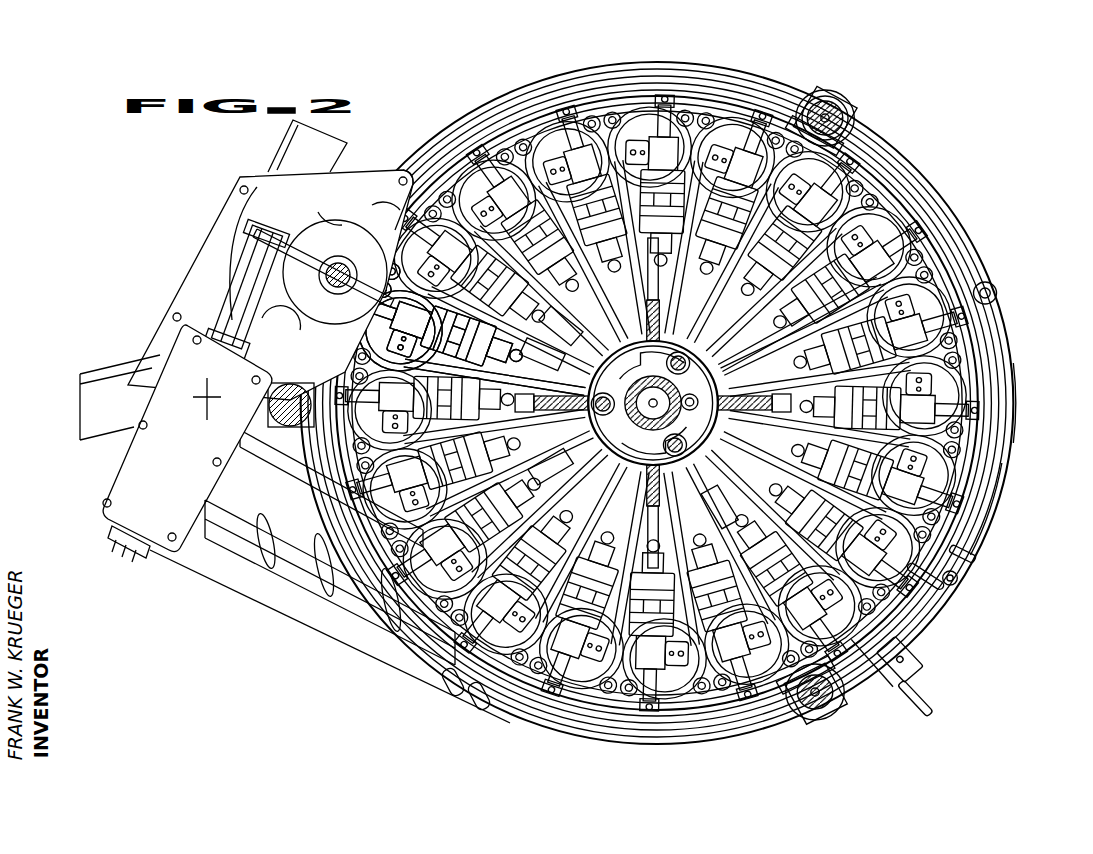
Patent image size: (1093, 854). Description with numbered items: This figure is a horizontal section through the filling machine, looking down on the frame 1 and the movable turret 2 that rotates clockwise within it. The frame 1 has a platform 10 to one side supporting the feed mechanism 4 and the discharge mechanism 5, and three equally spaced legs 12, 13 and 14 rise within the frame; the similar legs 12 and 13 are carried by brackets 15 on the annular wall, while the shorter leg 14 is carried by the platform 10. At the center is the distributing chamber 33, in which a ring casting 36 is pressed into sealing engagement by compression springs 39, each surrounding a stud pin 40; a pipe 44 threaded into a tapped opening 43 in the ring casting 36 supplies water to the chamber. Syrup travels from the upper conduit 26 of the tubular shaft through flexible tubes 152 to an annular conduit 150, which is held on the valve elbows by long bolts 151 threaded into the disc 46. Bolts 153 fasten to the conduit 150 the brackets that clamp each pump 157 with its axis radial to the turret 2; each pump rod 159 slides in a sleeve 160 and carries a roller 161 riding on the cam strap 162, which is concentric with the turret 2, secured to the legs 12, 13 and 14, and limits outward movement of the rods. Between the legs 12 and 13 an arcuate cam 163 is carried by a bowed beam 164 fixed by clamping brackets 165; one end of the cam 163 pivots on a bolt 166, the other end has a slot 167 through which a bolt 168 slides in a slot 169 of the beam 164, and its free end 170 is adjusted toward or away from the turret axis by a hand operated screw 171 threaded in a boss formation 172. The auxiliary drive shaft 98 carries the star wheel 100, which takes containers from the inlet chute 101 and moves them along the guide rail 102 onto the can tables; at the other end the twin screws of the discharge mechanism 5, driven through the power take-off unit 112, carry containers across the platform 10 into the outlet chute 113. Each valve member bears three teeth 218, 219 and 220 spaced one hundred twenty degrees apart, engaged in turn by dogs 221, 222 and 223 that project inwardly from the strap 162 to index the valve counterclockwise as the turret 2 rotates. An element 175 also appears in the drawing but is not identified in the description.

The frame 1 is at (657, 387).
The movable turret 2 is at (656, 368).
The feed mechanism 4 is at (300, 225).
The discharge mechanism 5 is at (310, 560).
The platform 10 is at (243, 225).
The leg 12 is at (864, 117).
The leg 13 is at (847, 699).
The leg 14 is at (280, 404).
The brackets 15 is at (809, 406).
The upper conduit 26 is at (685, 403).
The distributing chamber 33 is at (634, 299).
The ring casting 36 is at (623, 507).
The compression springs 39 is at (704, 386).
The stud pin 40 is at (547, 390).
The tapped opening 43 is at (686, 422).
The pipe 44 is at (710, 420).
The disc 46 is at (698, 403).
The auxiliary drive shaft 98 is at (339, 262).
The star wheel 100 is at (383, 210).
The inlet chute 101 is at (320, 146).
The guide rail 102 is at (223, 267).
The power take-off unit 112 is at (387, 262).
The outlet chute 113 is at (112, 406).
The annular conduit 150 is at (550, 342).
The long bolt 151 is at (553, 466).
The flexible tubes 152 is at (653, 400).
The bolts 153 is at (721, 507).
The pump 157 is at (669, 225).
The rod 159 is at (704, 403).
The sleeve 160 is at (670, 403).
The roller 161 is at (657, 403).
The cam strap 162 is at (656, 403).
The arcuate cam 163 is at (1021, 398).
The bowed beam 164 is at (1018, 509).
The clamping brackets 165 is at (859, 423).
The bolt 166 is at (1022, 293).
The slot 167 is at (982, 587).
The bolt 168 is at (1001, 578).
The slot 169 is at (1003, 561).
The free end 170 is at (880, 675).
The hand operated screw 171 is at (949, 630).
The boss formation 172 is at (941, 659).
The coupling 175 is at (574, 401).
The tooth 218 is at (731, 409).
The tooth 219 is at (718, 448).
The tooth 220 is at (818, 306).
The dog 221 is at (602, 201).
The dog 222 is at (882, 348).
The dog 223 is at (711, 617).